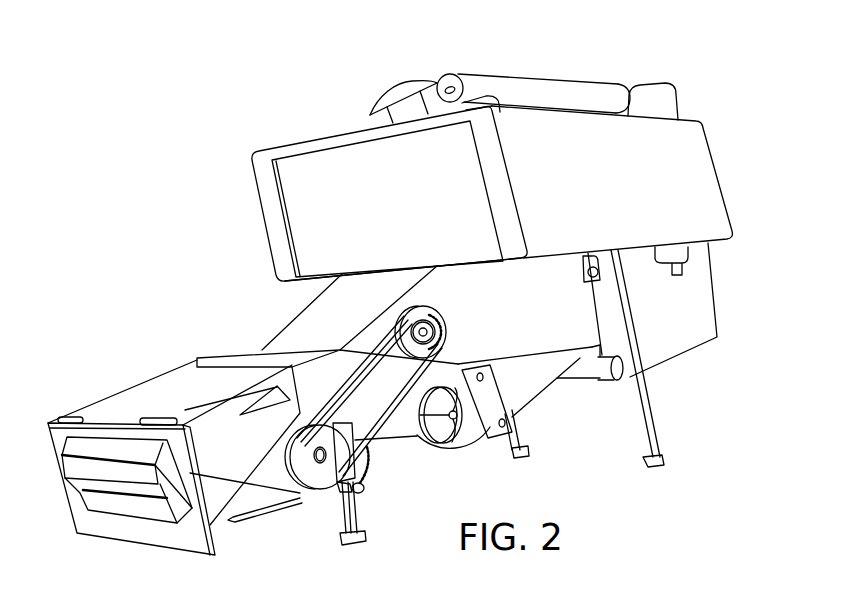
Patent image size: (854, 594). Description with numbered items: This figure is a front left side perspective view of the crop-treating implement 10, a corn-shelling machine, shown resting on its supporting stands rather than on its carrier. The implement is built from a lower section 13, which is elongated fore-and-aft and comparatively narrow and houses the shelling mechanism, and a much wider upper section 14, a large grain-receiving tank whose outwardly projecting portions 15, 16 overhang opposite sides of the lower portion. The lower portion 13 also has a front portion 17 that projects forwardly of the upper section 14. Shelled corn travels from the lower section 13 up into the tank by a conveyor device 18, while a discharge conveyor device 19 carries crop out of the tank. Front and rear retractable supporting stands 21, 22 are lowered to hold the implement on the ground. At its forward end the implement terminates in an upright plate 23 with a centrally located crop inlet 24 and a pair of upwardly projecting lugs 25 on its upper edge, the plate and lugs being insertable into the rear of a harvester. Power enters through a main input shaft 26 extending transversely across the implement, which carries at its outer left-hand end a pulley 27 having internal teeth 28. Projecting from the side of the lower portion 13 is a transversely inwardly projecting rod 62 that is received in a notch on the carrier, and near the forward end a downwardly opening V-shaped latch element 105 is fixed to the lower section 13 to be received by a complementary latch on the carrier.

The crop-treating implement 10 is at (702, 112).
The lower section 13 is at (687, 335).
The upper section 14 is at (692, 148).
The outwardly projecting portion 15 is at (483, 267).
The outwardly projecting portion 16 is at (300, 283).
The front portion 17 is at (163, 390).
The conveyor device 18 is at (410, 80).
The discharge conveyor device 19 is at (590, 88).
The front retractable supporting stand 21 is at (360, 517).
The rear retractable supporting stand 22 is at (637, 430).
The upright plate 23 is at (175, 543).
The crop inlet 24 is at (117, 507).
The upwardly projecting lugs 25 is at (153, 420).
The main input shaft 26 is at (419, 329).
The pulley 27 is at (432, 312).
The internal teeth 28 is at (443, 335).
The transversely inwardly projecting rod 62 is at (602, 273).
The V-shaped latch element 105 is at (360, 488).